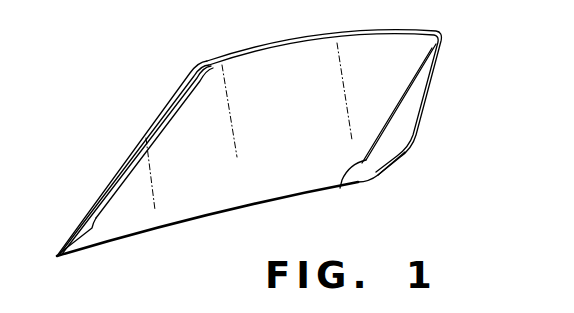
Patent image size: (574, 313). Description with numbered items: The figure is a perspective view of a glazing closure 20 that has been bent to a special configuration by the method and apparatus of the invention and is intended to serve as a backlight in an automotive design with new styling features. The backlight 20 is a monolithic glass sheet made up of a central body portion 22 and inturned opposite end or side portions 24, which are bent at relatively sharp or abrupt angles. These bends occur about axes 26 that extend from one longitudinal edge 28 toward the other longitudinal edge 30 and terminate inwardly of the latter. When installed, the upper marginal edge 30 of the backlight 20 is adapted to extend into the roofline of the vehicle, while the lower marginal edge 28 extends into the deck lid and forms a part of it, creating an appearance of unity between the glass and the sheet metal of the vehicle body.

The glazing closure 20 is at (179, 57).
The central body portion 22 is at (268, 150).
The inturned end portion 24 is at (97, 218).
The axis 26 is at (105, 180).
The lower longitudinal edge 28 is at (221, 213).
The upper longitudinal edge 30 is at (320, 34).